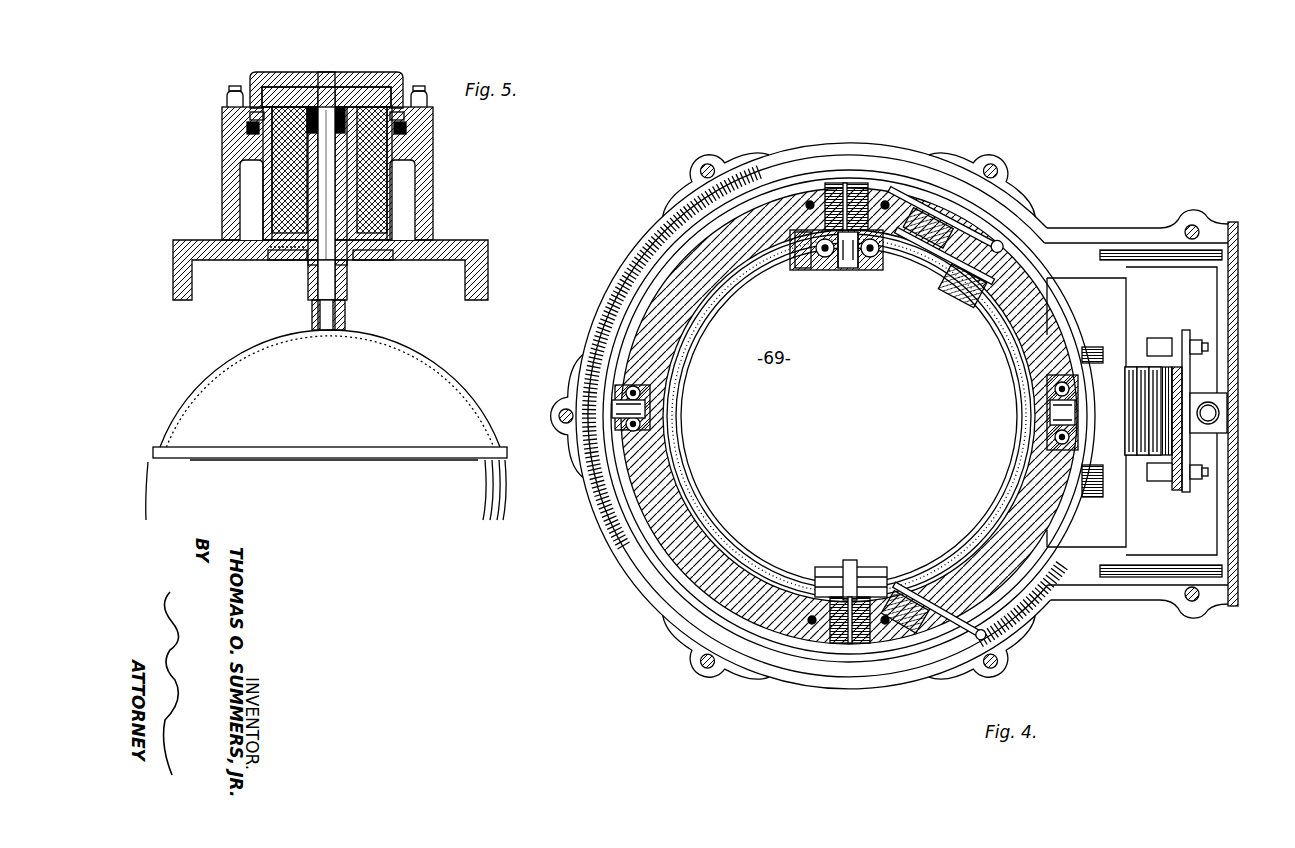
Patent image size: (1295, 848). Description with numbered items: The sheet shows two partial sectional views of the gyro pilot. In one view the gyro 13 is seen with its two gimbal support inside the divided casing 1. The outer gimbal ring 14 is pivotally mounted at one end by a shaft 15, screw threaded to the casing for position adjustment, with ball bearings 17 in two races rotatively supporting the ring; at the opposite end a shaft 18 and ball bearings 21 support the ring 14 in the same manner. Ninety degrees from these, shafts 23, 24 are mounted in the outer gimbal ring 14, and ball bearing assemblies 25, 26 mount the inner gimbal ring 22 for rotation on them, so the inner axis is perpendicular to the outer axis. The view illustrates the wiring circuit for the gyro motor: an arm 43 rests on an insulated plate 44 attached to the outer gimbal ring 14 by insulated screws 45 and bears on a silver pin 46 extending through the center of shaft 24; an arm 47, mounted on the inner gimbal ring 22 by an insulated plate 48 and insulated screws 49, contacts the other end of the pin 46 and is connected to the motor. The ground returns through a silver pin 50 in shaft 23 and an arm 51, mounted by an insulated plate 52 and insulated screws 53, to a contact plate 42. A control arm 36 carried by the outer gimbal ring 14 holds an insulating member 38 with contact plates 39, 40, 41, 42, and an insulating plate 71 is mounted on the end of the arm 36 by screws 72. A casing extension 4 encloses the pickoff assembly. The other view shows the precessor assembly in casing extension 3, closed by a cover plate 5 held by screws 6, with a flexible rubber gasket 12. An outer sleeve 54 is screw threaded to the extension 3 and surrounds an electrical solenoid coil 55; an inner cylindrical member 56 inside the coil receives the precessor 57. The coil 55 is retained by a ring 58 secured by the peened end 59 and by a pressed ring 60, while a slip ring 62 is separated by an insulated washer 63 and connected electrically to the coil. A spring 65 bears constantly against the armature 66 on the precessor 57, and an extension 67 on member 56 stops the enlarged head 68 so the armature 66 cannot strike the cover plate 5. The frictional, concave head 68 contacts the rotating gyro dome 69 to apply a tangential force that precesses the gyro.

In FIG. 5, the divided casing 1 is at (478, 238).
In FIG. 4, the divided casing 1 is at (778, 152).
In FIG. 5, the casing extension 3 is at (422, 186).
In FIG. 4, the casing extension 4 is at (1126, 242).
In FIG. 5, the cover plate 5 is at (384, 74).
In FIG. 5, the screws 6 is at (421, 88).
In FIG. 5, the flexible rubber gasket 12 is at (247, 128).
In FIG. 5, the gyro 13 is at (480, 400).
In FIG. 4, the gyro 13 is at (743, 520).
In FIG. 4, the outer gimbal ring 14 is at (702, 250).
In FIG. 4, the shaft 15 is at (635, 410).
In FIG. 4, the ball bearings 17 is at (625, 425).
In FIG. 4, the shaft 18 is at (1055, 410).
In FIG. 4, the ball bearings 21 is at (1050, 395).
In FIG. 5, the inner gimbal ring 22 is at (490, 480).
In FIG. 4, the inner gimbal ring 22 is at (685, 482).
In FIG. 4, the shaft 23 is at (860, 568).
In FIG. 4, the shaft 24 is at (835, 268).
In FIG. 4, the ball bearing assembly 25 is at (840, 568).
In FIG. 4, the ball bearing assembly 26 is at (800, 258).
In FIG. 4, the control arm 36 is at (1103, 475).
In FIG. 4, the insulating member 38 is at (1130, 366).
In FIG. 4, the contact plate 39 is at (1178, 447).
In FIG. 4, the contact plate 40 is at (1165, 372).
In FIG. 4, the contact plate 41 is at (1139, 425).
In FIG. 4, the contact plate 42 is at (1150, 435).
In FIG. 4, the arm 43 is at (915, 205).
In FIG. 4, the insulated plate 44 is at (958, 210).
In FIG. 4, the insulated screws 45 is at (1000, 240).
In FIG. 4, the silver pin 46 is at (850, 185).
In FIG. 4, the arm 47 is at (870, 270).
In FIG. 4, the insulated plate 48 is at (920, 265).
In FIG. 4, the insulated screws 49 is at (960, 290).
In FIG. 4, the silver pin 50 is at (850, 646).
In FIG. 4, the arm 51 is at (908, 632).
In FIG. 4, the insulated plate 52 is at (950, 618).
In FIG. 4, the insulated screws 53 is at (1000, 632).
In FIG. 5, the outer sleeve 54 is at (389, 180).
In FIG. 5, the electrical solenoid coil 55 is at (372, 202).
In FIG. 5, the inner cylindrical member 56 is at (347, 220).
In FIG. 5, the precessor 57 is at (333, 268).
In FIG. 5, the ring 58 is at (262, 114).
In FIG. 5, the peened end 59 is at (317, 100).
In FIG. 5, the ring 60 is at (283, 258).
In FIG. 5, the slip ring 62 is at (294, 258).
In FIG. 5, the insulated washer 63 is at (390, 255).
In FIG. 5, the spring 65 is at (349, 100).
In FIG. 5, the armature 66 is at (282, 94).
In FIG. 5, the extension 67 is at (348, 290).
In FIG. 5, the enlarged head 68 is at (346, 318).
In FIG. 5, the gyro dome 69 is at (430, 375).
In FIG. 4, the insulating plate 71 is at (1186, 492).
In FIG. 4, the screws 72 is at (1208, 347).